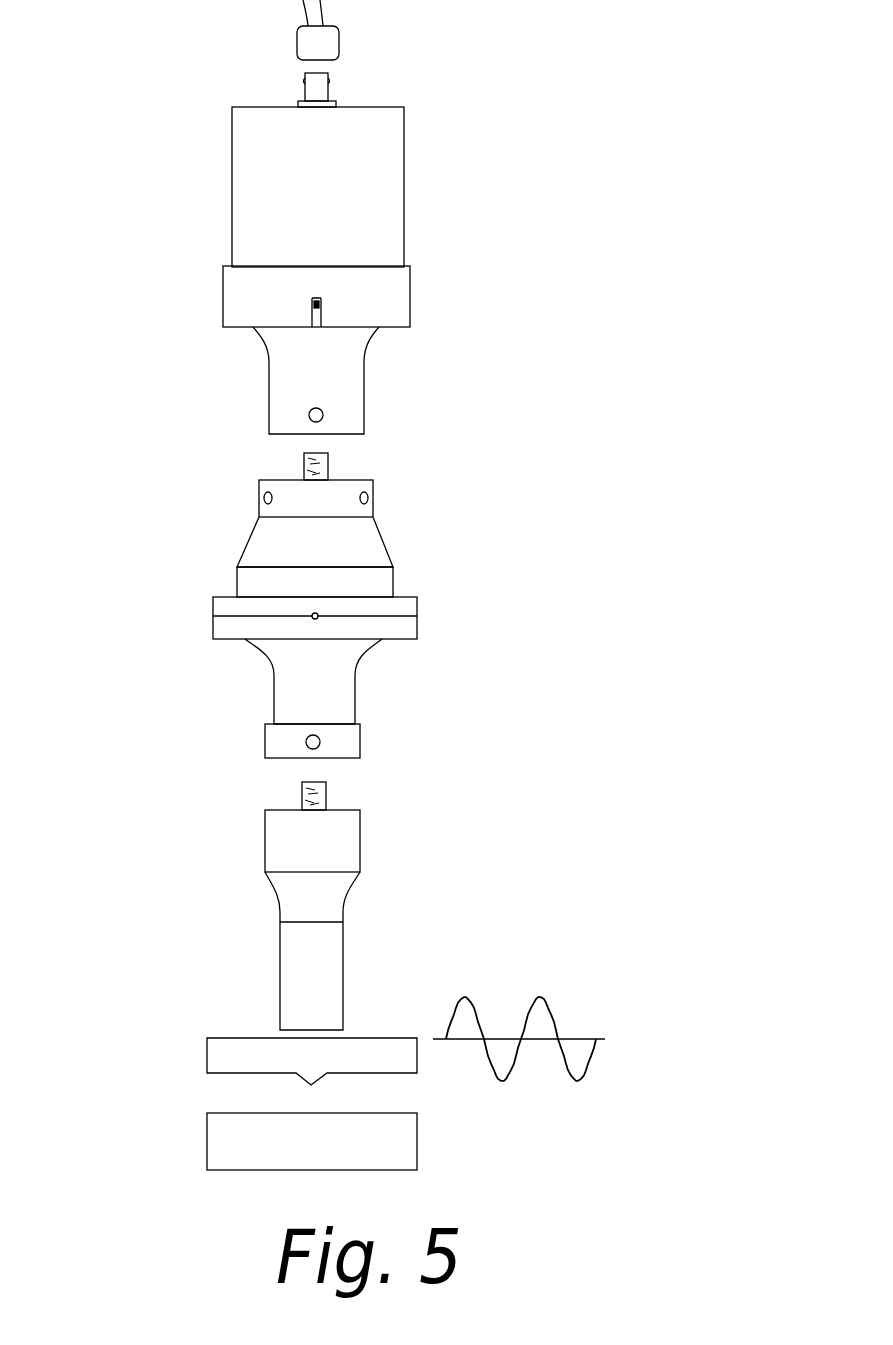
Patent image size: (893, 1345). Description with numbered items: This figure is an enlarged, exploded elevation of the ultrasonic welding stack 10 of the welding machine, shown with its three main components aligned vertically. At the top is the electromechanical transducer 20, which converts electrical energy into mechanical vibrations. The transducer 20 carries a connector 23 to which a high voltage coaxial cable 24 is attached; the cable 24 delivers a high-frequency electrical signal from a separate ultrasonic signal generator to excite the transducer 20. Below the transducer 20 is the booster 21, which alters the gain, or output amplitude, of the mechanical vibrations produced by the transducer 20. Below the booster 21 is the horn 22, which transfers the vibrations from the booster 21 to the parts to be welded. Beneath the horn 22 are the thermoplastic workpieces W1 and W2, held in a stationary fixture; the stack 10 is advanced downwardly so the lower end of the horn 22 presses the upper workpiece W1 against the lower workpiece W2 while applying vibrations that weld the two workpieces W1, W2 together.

The ultrasonic welding stack 10 is at (331, 515).
The electromechanical transducer 20 is at (397, 270).
The booster 21 is at (387, 605).
The horn 22 is at (387, 906).
The connector 23 is at (432, 73).
The high voltage coaxial cable 24 is at (218, 53).
The upper workpiece W1 is at (236, 1011).
The lower workpiece W2 is at (236, 1101).